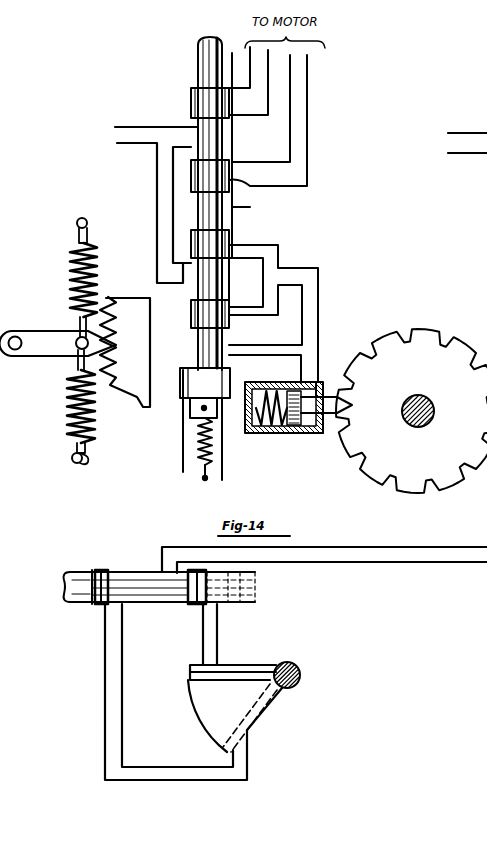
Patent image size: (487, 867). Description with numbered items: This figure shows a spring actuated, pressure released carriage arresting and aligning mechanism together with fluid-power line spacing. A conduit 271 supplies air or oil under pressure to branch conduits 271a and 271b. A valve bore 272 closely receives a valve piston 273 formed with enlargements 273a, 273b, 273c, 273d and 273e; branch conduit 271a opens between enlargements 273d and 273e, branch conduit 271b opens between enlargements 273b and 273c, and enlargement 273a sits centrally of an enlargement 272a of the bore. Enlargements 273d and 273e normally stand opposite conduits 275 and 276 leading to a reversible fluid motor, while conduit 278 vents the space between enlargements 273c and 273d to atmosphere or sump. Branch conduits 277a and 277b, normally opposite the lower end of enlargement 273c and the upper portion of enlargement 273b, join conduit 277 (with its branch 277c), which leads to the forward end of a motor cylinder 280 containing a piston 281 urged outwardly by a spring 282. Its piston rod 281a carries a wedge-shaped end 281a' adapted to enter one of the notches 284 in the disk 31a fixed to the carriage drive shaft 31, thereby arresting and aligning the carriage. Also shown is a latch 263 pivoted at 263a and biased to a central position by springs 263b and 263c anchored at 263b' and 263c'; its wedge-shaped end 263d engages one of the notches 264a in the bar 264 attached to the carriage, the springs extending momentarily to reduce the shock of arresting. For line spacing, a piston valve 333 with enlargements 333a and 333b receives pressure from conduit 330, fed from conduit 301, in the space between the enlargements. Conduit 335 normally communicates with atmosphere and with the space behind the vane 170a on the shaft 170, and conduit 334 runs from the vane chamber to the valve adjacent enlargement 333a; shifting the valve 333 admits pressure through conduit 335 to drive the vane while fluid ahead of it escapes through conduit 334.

The carriage drive shaft 31 is at (432, 400).
The disk 31a is at (367, 466).
The shaft 170 is at (298, 668).
The vane 170a is at (211, 679).
The latch 263 is at (62, 357).
The pivot 263a is at (17, 331).
The spring 263b is at (104, 274).
The anchor 263b' is at (108, 227).
The spring 263c is at (58, 415).
The anchor 263c' is at (61, 462).
The wedge-shaped end 263d is at (113, 344).
The bar 264 is at (134, 398).
The notches 264a is at (104, 303).
The conduit 271 is at (124, 127).
The branch conduit 271a is at (190, 130).
The branch conduit 271b is at (157, 197).
The valve bore 272 is at (183, 472).
The enlargement 272a is at (230, 382).
The valve piston 273 is at (192, 348).
The enlargement 273a is at (186, 386).
The enlargement 273b is at (229, 322).
The enlargement 273c is at (187, 260).
The enlargement 273d is at (240, 182).
The enlargement 273e is at (194, 101).
The conduit 275 is at (282, 163).
The conduit 276 is at (250, 106).
The conduit 277 is at (318, 299).
The branch conduit 277a is at (245, 245).
The branch conduit 277b is at (248, 307).
The conductor branch 277c is at (290, 350).
The conduit 278 is at (250, 209).
The motor cylinder 280 is at (265, 434).
The piston 281 is at (296, 434).
The piston rod 281a is at (326, 424).
The wedge-shaped end 281a' is at (367, 392).
The spring 282 is at (285, 434).
The notches 284 is at (384, 343).
The conduit 301 is at (464, 134).
The conduit 330 is at (392, 565).
The piston valve 333 is at (116, 570).
The enlargement 333a is at (94, 604).
The enlargement 333b is at (193, 605).
The conduit 334 is at (120, 684).
The conduit 335 is at (217, 632).